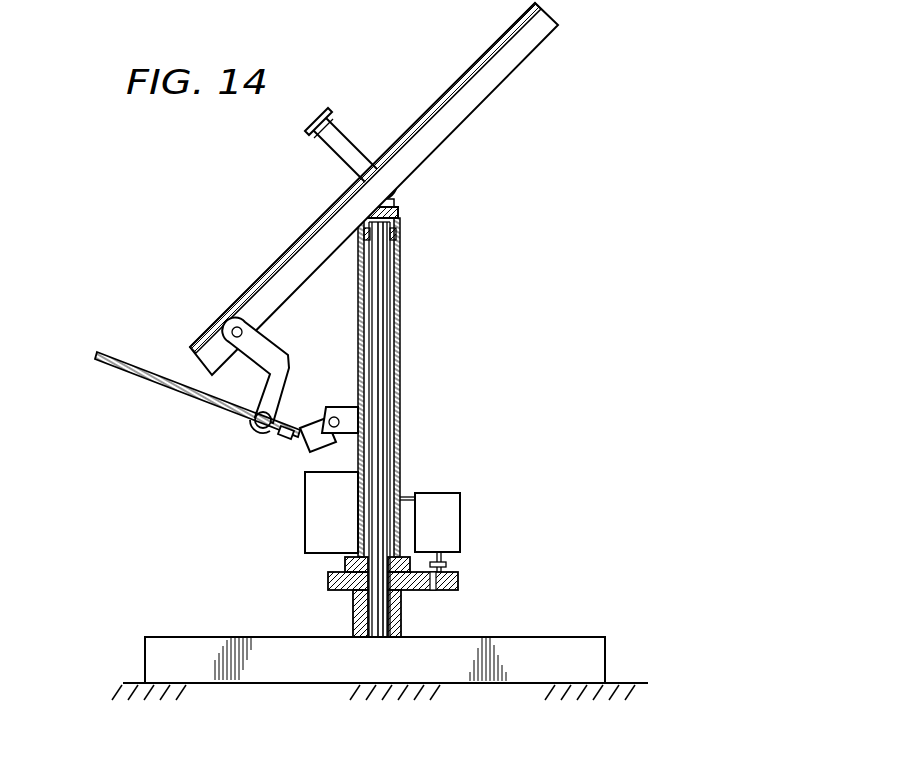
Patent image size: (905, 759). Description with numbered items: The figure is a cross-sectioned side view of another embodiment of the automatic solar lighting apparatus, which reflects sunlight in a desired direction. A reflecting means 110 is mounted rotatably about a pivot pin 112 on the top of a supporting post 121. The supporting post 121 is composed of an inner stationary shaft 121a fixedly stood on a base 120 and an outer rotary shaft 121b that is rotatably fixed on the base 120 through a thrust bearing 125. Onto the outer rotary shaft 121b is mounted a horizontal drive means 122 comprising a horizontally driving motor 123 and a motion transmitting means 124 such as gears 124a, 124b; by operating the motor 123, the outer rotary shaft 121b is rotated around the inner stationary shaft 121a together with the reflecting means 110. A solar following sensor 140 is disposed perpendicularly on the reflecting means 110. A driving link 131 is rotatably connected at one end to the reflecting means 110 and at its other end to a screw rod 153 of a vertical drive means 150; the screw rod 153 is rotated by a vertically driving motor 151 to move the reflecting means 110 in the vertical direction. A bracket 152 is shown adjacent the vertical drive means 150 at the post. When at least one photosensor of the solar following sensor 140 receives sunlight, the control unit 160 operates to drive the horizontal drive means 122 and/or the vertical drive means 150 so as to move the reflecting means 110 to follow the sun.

The reflecting means 110 is at (470, 67).
The pivot pin 112 is at (388, 183).
The base 120 is at (538, 652).
The supporting post 121 is at (451, 427).
The inner stationary shaft 121a is at (380, 316).
The outer rotary shaft 121b is at (398, 352).
The horizontal drive means 122 is at (500, 492).
The horizontally driving motor 123 is at (442, 500).
The motion transmitting means 124 is at (468, 582).
The gear 124a is at (400, 592).
The gear 124b is at (457, 573).
The thrust bearing 125 is at (343, 560).
The driving link 131 is at (267, 353).
The solar following sensor 140 is at (348, 136).
The vertical drive means 150 is at (215, 429).
The vertically driving motor 151 is at (308, 458).
The mounting bracket 152 is at (343, 407).
The screw rod 153 is at (200, 403).
The control unit 160 is at (317, 513).